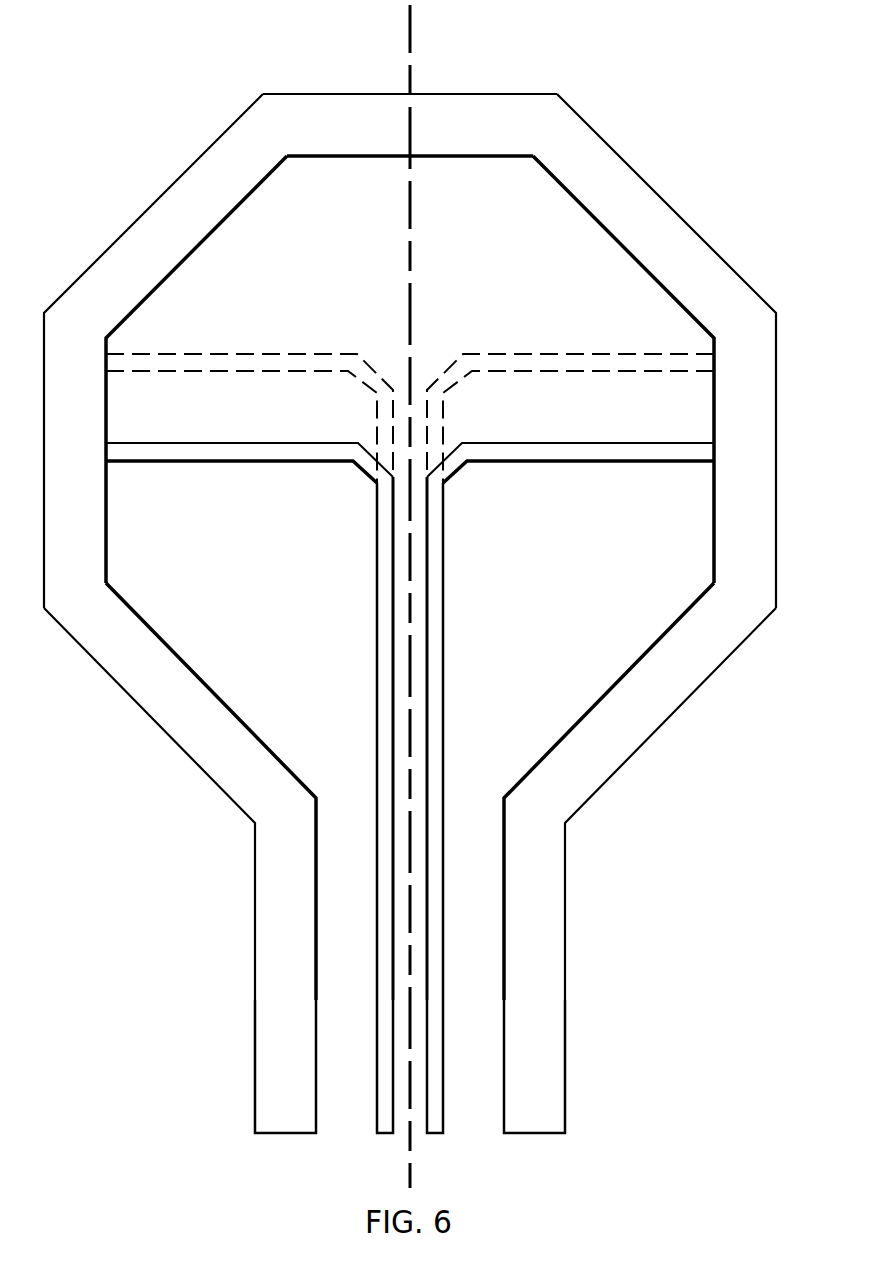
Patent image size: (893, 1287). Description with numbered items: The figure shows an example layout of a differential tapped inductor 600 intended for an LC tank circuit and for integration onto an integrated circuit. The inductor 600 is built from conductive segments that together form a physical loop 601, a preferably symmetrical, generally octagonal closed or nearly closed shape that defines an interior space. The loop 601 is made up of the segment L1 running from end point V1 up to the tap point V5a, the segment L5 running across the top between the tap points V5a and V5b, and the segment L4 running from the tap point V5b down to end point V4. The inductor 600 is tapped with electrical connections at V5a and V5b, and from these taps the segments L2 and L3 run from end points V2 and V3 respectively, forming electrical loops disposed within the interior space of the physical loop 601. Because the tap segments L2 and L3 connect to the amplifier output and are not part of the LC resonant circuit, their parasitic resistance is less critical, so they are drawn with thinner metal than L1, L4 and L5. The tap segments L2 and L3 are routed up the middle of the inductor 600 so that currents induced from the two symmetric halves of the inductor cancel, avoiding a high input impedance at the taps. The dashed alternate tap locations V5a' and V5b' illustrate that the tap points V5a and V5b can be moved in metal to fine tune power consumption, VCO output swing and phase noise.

The differential tapped inductor 600 is at (182, 66).
The physical loop 601 is at (663, 210).
The inductor segment V1-V5a L1 is at (180, 791).
The tap segment V2-V5a L2 is at (372, 738).
The tap segment V3-V5b L3 is at (448, 738).
The inductor segment V4-V5b L4 is at (640, 791).
The inductor segment V5a-V5b L5 is at (410, 111).
The segment end point V1 is at (285, 1081).
The tap segment end point V2 is at (386, 1081).
The tap segment end point V3 is at (436, 1081).
The segment end point V4 is at (534, 1081).
The tap point V5a is at (228, 461).
The alternate tap location V5a' is at (228, 417).
The tap point V5b is at (592, 462).
The alternate tap location V5b' is at (592, 418).